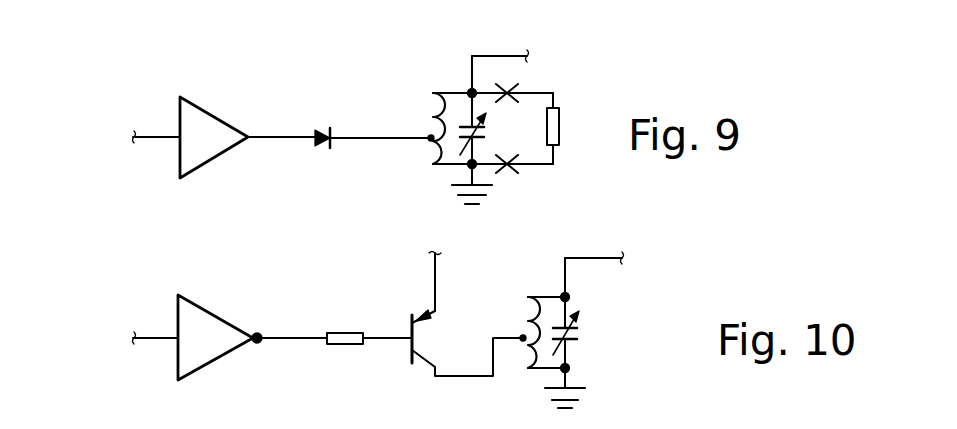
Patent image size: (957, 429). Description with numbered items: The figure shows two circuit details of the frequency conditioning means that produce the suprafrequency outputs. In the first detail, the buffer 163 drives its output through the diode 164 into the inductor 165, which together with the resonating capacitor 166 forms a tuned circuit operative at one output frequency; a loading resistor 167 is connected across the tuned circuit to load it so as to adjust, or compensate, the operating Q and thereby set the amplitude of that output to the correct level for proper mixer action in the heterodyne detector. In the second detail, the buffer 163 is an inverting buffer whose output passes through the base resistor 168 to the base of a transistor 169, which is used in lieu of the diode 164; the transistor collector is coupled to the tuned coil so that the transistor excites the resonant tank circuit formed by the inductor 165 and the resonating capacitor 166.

In FIG. 9, the buffer 163 is at (203, 135).
In FIG. 10, the buffer 163 is at (207, 337).
In FIG. 9, the diode 164 is at (325, 152).
In FIG. 9, the inductor 165 is at (428, 113).
In FIG. 10, the inductor 165 is at (520, 323).
In FIG. 9, the resonating capacitor 166 is at (486, 126).
In FIG. 10, the resonating capacitor 166 is at (580, 340).
In FIG. 9, the loading resistor 167 is at (556, 126).
In FIG. 10, the base resistor 168 is at (350, 337).
In FIG. 10, the transistor 169 is at (405, 320).